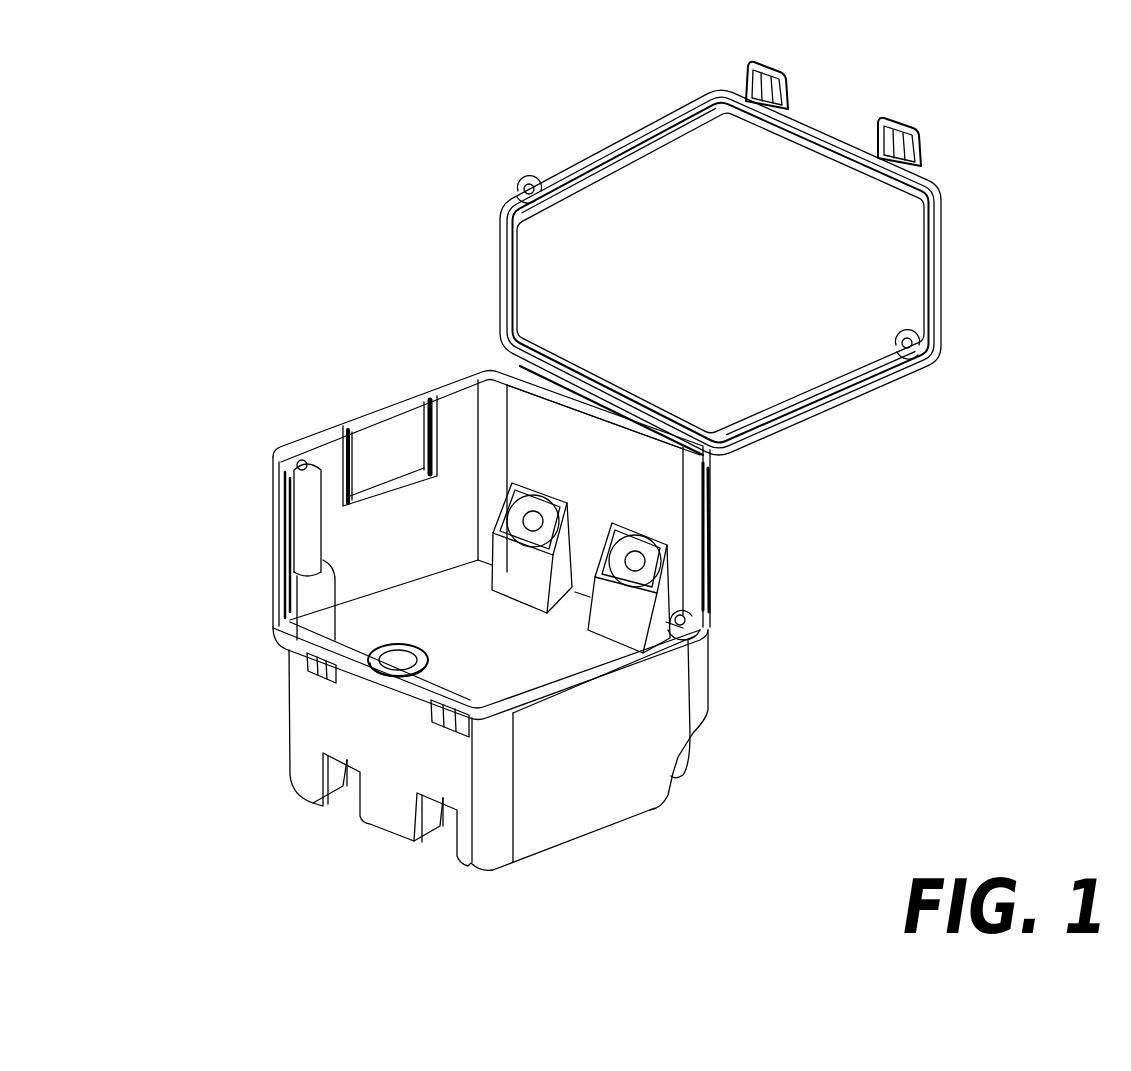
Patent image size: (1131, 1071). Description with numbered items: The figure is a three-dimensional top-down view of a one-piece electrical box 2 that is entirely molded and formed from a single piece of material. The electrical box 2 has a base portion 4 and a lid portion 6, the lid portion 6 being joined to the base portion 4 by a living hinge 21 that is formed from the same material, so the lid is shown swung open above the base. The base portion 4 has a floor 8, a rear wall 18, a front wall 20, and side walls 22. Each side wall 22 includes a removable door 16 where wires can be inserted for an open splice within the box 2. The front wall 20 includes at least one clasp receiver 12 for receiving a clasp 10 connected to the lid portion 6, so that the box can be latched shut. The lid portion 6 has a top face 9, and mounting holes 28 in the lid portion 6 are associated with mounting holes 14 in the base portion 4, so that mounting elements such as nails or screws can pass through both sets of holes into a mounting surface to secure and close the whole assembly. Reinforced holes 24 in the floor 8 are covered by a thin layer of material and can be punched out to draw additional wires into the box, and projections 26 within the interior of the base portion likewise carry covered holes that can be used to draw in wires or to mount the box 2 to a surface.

The electrical box 2 is at (142, 229).
The base portion 4 is at (822, 528).
The lid portion 6 is at (985, 212).
The floor 8 is at (476, 638).
The top face 9 is at (702, 281).
The clasp 10 is at (782, 83).
The clasp receiver 12 is at (440, 717).
The mounting holes 14 is at (300, 462).
The removable door 16 is at (383, 434).
The rear wall 18 is at (592, 478).
The front wall 20 is at (383, 768).
The living hinge 21 is at (600, 407).
The side walls 22 is at (297, 617).
The reinforced holes 24 is at (412, 648).
The projections 26 is at (522, 557).
The mounting holes 28 is at (523, 187).